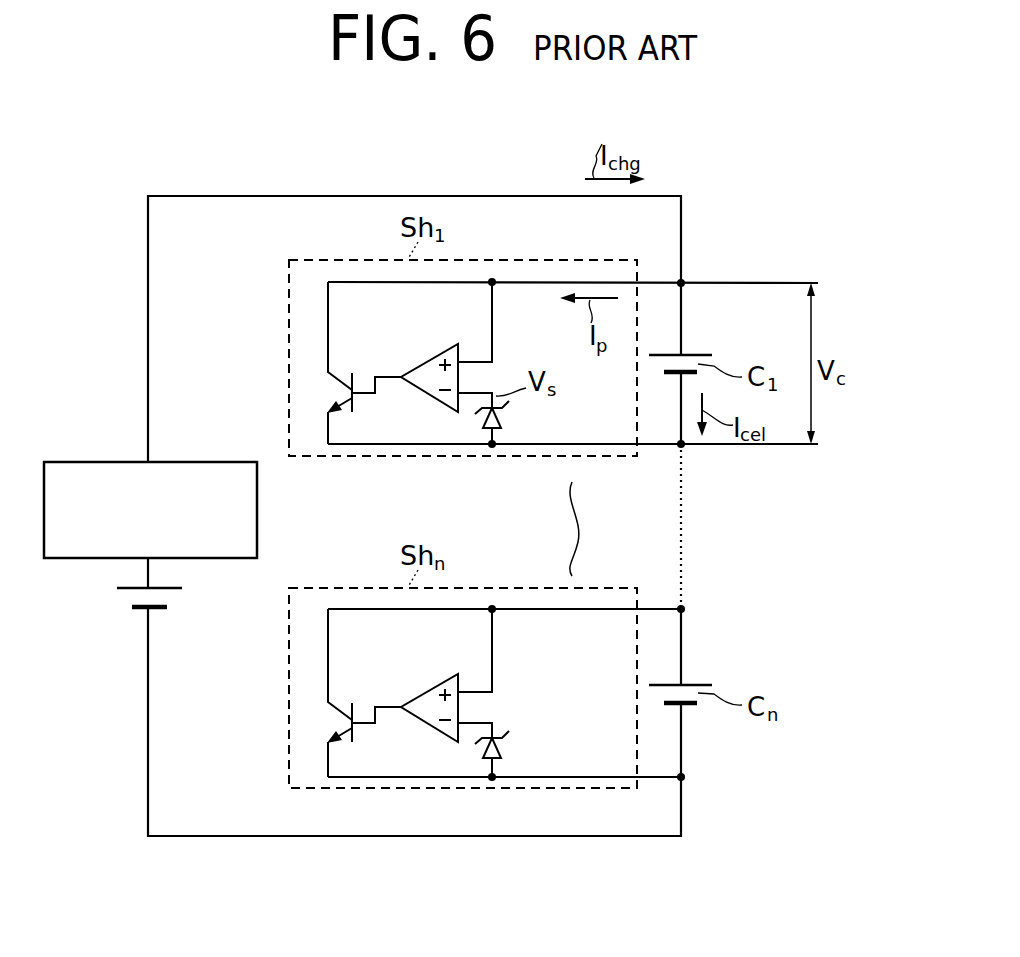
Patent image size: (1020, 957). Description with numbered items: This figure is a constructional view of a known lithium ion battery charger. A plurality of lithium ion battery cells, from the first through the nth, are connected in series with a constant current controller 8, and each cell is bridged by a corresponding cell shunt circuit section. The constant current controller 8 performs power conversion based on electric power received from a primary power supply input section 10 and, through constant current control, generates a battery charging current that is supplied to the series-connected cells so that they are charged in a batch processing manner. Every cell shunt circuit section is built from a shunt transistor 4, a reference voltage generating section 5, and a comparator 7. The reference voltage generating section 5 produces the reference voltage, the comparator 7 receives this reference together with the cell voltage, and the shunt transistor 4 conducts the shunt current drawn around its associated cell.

The shunt transistor 4 is at (354, 404).
The reference voltage generating section 5 is at (479, 418).
The comparator 7 is at (439, 350).
The constant current controller 8 is at (63, 462).
The primary power supply input section 10 is at (130, 594).